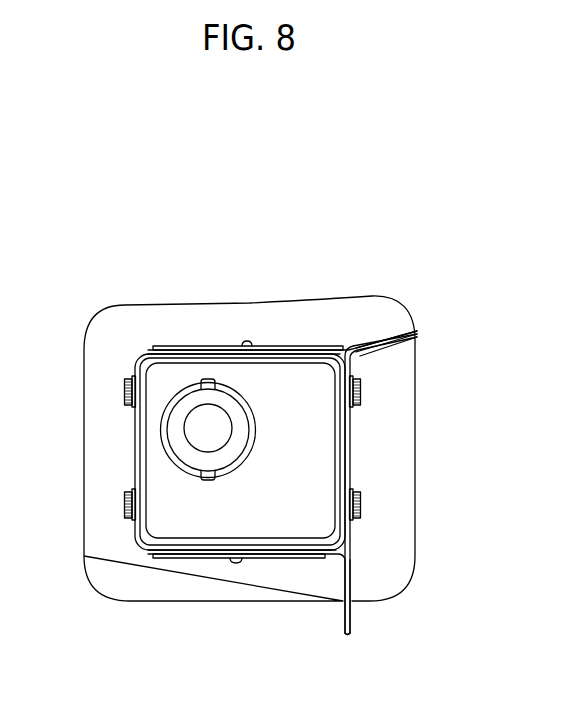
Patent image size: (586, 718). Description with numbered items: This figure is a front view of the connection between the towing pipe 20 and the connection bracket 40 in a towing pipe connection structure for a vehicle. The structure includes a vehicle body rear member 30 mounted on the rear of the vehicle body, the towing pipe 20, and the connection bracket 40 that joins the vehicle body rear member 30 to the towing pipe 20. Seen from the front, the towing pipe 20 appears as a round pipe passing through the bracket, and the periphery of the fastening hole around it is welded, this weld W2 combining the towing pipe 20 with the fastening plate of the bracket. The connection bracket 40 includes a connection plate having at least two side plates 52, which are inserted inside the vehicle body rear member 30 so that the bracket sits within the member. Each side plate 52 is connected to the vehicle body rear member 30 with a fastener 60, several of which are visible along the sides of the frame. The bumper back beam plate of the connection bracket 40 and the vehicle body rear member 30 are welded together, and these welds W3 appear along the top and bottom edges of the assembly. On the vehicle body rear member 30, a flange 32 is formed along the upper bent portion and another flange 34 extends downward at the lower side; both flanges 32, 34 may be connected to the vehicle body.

The towing pipe 20 is at (187, 401).
The vehicle body rear member 30 is at (115, 482).
The flange 32 is at (377, 335).
The flange 34 is at (352, 630).
The connection bracket 40 is at (436, 516).
The side plate 52 is at (145, 458).
The fastener 60 is at (125, 391).
The weld W2 is at (160, 428).
The weld W3 is at (285, 343).